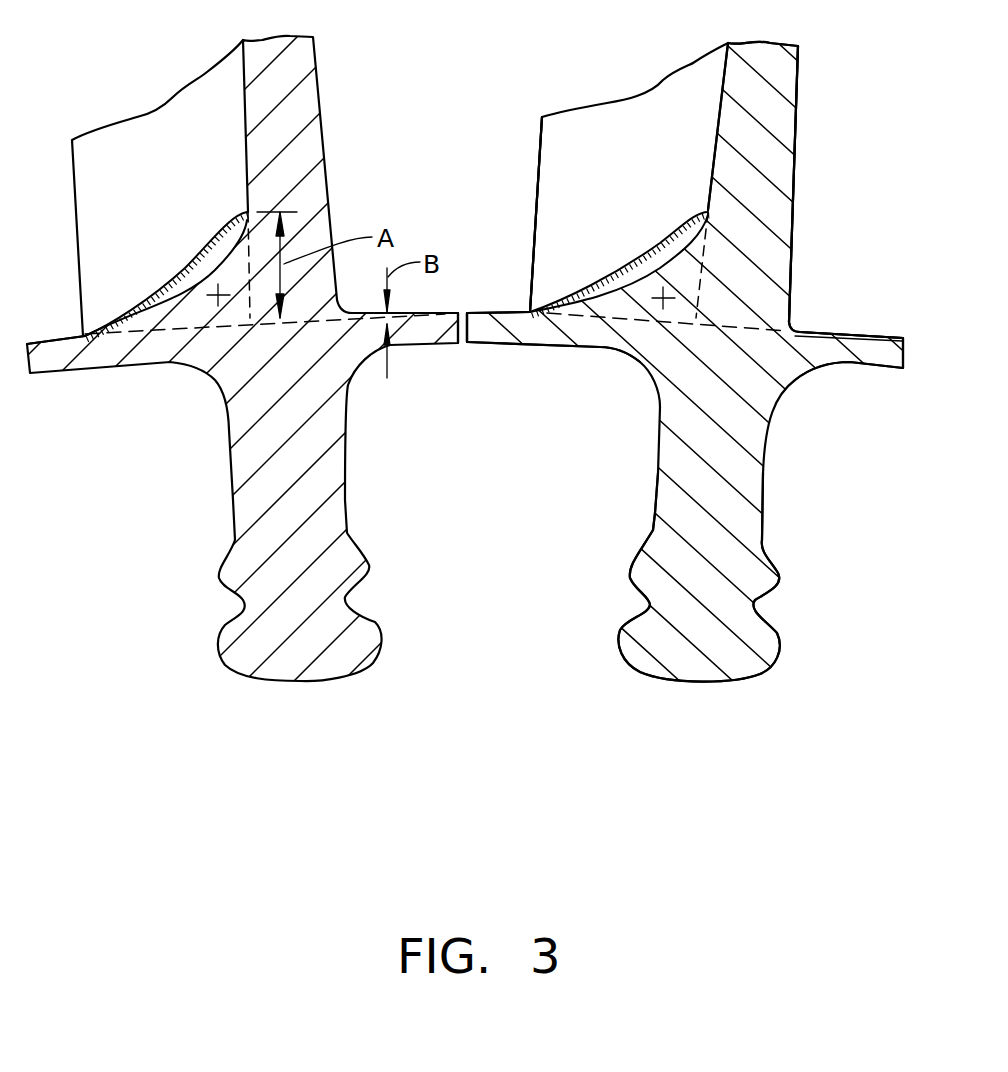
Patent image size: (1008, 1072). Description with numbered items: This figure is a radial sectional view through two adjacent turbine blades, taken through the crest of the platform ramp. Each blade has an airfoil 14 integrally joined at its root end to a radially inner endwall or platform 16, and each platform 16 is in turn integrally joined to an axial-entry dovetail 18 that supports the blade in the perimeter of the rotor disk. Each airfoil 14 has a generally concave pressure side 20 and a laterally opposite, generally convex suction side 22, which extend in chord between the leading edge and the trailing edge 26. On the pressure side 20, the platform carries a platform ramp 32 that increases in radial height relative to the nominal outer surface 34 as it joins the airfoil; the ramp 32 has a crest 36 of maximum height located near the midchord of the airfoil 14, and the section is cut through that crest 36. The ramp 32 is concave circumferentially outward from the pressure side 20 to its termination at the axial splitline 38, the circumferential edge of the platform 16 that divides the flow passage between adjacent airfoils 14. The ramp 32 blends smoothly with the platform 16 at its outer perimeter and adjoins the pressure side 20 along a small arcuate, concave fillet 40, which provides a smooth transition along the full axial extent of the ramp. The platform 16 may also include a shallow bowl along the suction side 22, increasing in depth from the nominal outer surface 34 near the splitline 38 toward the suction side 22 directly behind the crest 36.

The airfoil 14 is at (790, 249).
The platform 16 is at (903, 338).
The axial-entry dovetail 18 is at (780, 573).
The pressure side 20 is at (634, 171).
The suction side 22 is at (797, 117).
The trailing edge 26 is at (537, 182).
The platform ramp 32 is at (187, 297).
The nominal outer surface 34 is at (60, 341).
The crest 36 is at (678, 223).
The axial splitline 38 is at (463, 343).
The fillet 40 is at (247, 212).